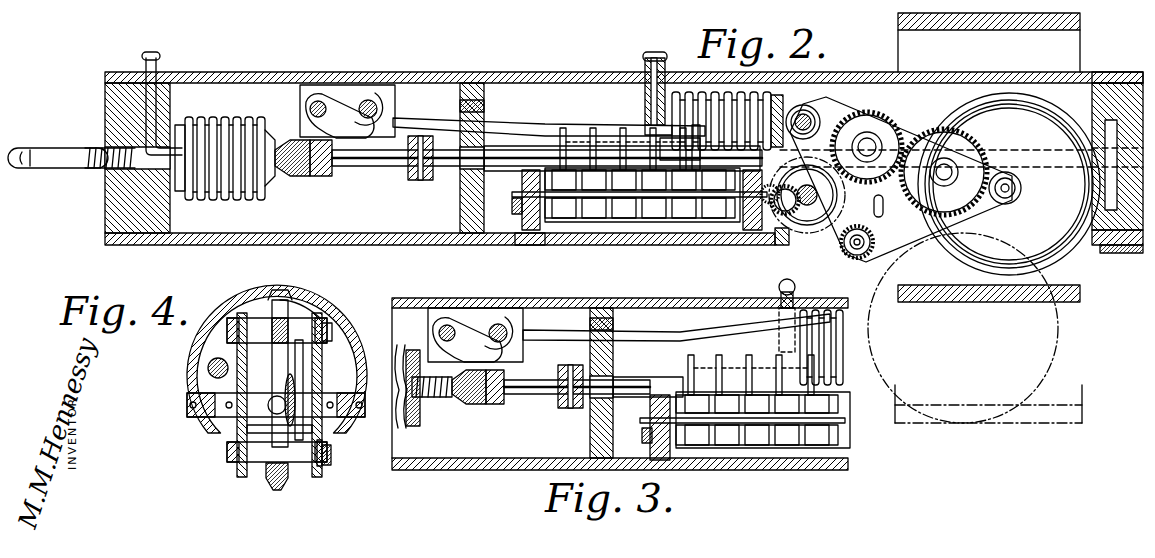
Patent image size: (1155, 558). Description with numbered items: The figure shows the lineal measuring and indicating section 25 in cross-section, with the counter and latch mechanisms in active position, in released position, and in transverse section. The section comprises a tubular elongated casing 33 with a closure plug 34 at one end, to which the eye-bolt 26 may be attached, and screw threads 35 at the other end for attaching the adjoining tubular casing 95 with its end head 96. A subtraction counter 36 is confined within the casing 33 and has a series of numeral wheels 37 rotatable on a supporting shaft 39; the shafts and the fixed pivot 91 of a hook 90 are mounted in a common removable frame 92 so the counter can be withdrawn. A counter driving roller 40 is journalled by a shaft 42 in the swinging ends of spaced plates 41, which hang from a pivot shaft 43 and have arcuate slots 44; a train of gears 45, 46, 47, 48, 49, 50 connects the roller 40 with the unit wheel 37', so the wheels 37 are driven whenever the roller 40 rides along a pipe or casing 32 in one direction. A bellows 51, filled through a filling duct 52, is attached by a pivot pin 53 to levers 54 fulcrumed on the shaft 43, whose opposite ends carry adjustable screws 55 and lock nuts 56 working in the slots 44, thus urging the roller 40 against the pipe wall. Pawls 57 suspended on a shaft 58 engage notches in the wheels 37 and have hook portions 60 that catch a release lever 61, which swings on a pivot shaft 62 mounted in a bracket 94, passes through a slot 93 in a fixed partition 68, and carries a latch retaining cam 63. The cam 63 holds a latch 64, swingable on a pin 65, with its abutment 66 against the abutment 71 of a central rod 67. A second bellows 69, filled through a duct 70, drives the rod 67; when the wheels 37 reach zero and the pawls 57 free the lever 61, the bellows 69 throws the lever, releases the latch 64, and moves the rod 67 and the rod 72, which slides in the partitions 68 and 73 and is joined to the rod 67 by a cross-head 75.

In FIG. 2, the lineal measuring and indicating section 25 is at (106, 74).
In FIG. 3, the lineal measuring and indicating section 25 is at (620, 384).
In FIG. 4, the lineal measuring and indicating section 25 is at (192, 338).
In FIG. 2, the eye-bolt 26 is at (60, 168).
In FIG. 2, the casing 32 is at (935, 310).
In FIG. 2, the tubular elongated casing 33 is at (560, 56).
In FIG. 4, the tubular elongated casing 33 is at (322, 300).
In FIG. 2, the closure plug 34 is at (118, 218).
In FIG. 2, the screw threads 35 is at (1105, 73).
In FIG. 2, the counter 36 is at (624, 222).
In FIG. 3, the counter 36 is at (768, 448).
In FIG. 2, the numeral wheels 37 is at (567, 216).
In FIG. 3, the numeral wheels 37 is at (707, 440).
In FIG. 2, the unit wheel 37' is at (713, 216).
In FIG. 3, the unit wheel 37' is at (823, 440).
In FIG. 2, the supporting shaft 39 is at (770, 180).
In FIG. 2, the counter driving roller 40 is at (1008, 282).
In FIG. 4, the counter driving roller 40 is at (274, 490).
In FIG. 2, the plates 41 is at (950, 224).
In FIG. 4, the plates 41 is at (243, 478).
In FIG. 2, the shaft 42 is at (1046, 210).
In FIG. 2, the pivot shaft 43 is at (808, 206).
In FIG. 4, the pivot shaft 43 is at (192, 407).
In FIG. 2, the arcuate slots 44 is at (878, 216).
In FIG. 2, the gear 45 is at (1009, 175).
In FIG. 2, the gear 46 is at (950, 128).
In FIG. 2, the gear 47 is at (880, 114).
In FIG. 2, the gear 48 is at (782, 214).
In FIG. 4, the gear 48 is at (303, 420).
In FIG. 2, the gear 49 is at (843, 172).
In FIG. 4, the gear 49 is at (270, 410).
In FIG. 2, the gear 50 is at (768, 205).
In FIG. 4, the gear 50 is at (270, 432).
In FIG. 2, the bellows 51 is at (716, 92).
In FIG. 3, the bellows 51 is at (836, 310).
In FIG. 4, the bellows 51 is at (280, 292).
In FIG. 2, the filling duct 52 is at (643, 56).
In FIG. 3, the filling duct 52 is at (778, 285).
In FIG. 2, the pivot pin 53 is at (808, 118).
In FIG. 4, the pivot pin 53 is at (332, 332).
In FIG. 2, the levers 54 is at (799, 106).
In FIG. 4, the levers 54 is at (252, 318).
In FIG. 2, the adjustable screws 55 is at (852, 247).
In FIG. 4, the adjustable screws 55 is at (322, 466).
In FIG. 2, the lock nuts 56 is at (860, 258).
In FIG. 4, the lock nuts 56 is at (333, 458).
In FIG. 2, the pawls 57 is at (594, 128).
In FIG. 3, the pawls 57 is at (750, 364).
In FIG. 2, the shaft 58 is at (672, 222).
In FIG. 3, the shaft 58 is at (845, 421).
In FIG. 2, the hook portions 60 is at (668, 132).
In FIG. 2, the release lever 61 is at (520, 126).
In FIG. 3, the release lever 61 is at (664, 328).
In FIG. 2, the pivot shaft 62 is at (366, 100).
In FIG. 3, the pivot shaft 62 is at (494, 324).
In FIG. 2, the latch retaining cam 63 is at (385, 98).
In FIG. 3, the latch retaining cam 63 is at (515, 322).
In FIG. 2, the latch 64 is at (340, 110).
In FIG. 3, the latch 64 is at (466, 334).
In FIG. 2, the pin 65 is at (310, 106).
In FIG. 3, the pin 65 is at (439, 331).
In FIG. 2, the abutment 66 is at (338, 175).
In FIG. 3, the abutment 66 is at (460, 385).
In FIG. 2, the central rod 67 is at (350, 170).
In FIG. 3, the central rod 67 is at (522, 388).
In FIG. 2, the fixed partition 68 is at (466, 213).
In FIG. 3, the fixed partition 68 is at (598, 438).
In FIG. 2, the bellows 69 is at (230, 206).
In FIG. 3, the bellows 69 is at (404, 425).
In FIG. 2, the filling duct 70 is at (160, 58).
In FIG. 2, the abutment 71 is at (325, 182).
In FIG. 3, the abutment 71 is at (492, 404).
In FIG. 2, the rod 72 is at (512, 168).
In FIG. 3, the rod 72 is at (655, 386).
In FIG. 4, the rod 72 is at (207, 367).
In FIG. 2, the fixed partition 73 is at (1112, 246).
In FIG. 2, the cross-head 75 is at (412, 182).
In FIG. 3, the cross-head 75 is at (580, 366).
In FIG. 2, the hook 90 is at (530, 176).
In FIG. 3, the hook 90 is at (660, 405).
In FIG. 2, the fixed pivot 91 is at (530, 206).
In FIG. 3, the fixed pivot 91 is at (658, 436).
In FIG. 2, the removable frame 92 is at (528, 244).
In FIG. 2, the slot 93 is at (478, 107).
In FIG. 3, the slot 93 is at (612, 356).
In FIG. 2, the bracket 94 is at (304, 90).
In FIG. 3, the bracket 94 is at (432, 312).
In FIG. 2, the tubular casing 95 is at (1104, 92).
In FIG. 2, the end head 96 is at (1125, 254).